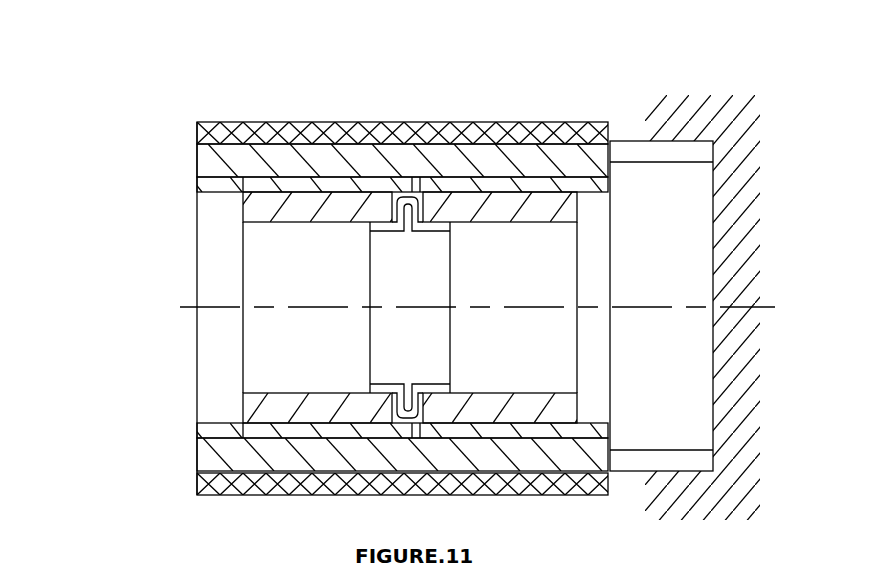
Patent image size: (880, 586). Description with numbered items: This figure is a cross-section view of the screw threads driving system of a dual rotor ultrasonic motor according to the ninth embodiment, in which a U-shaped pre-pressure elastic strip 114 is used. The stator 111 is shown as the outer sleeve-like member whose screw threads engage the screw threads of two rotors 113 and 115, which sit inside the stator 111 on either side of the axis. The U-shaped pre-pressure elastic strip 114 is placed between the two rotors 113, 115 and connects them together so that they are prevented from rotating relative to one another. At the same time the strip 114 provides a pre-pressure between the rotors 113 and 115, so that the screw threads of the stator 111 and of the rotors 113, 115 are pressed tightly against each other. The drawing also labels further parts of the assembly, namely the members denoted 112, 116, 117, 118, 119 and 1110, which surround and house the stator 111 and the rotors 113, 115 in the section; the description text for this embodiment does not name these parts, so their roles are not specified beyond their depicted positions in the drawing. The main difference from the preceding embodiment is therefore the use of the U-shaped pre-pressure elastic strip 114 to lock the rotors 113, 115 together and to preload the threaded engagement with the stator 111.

The stator 111 is at (237, 163).
The outer housing wall 112 is at (307, 170).
The rotor 113 is at (347, 205).
The U-shaped pre-pressure elastic strip 114 is at (414, 193).
The rotor 115 is at (473, 207).
The end block 116 is at (622, 148).
The mounting wall 117 is at (708, 118).
The right cavity 118 is at (510, 329).
The left cavity 119 is at (290, 358).
The end opening 1110 is at (217, 279).